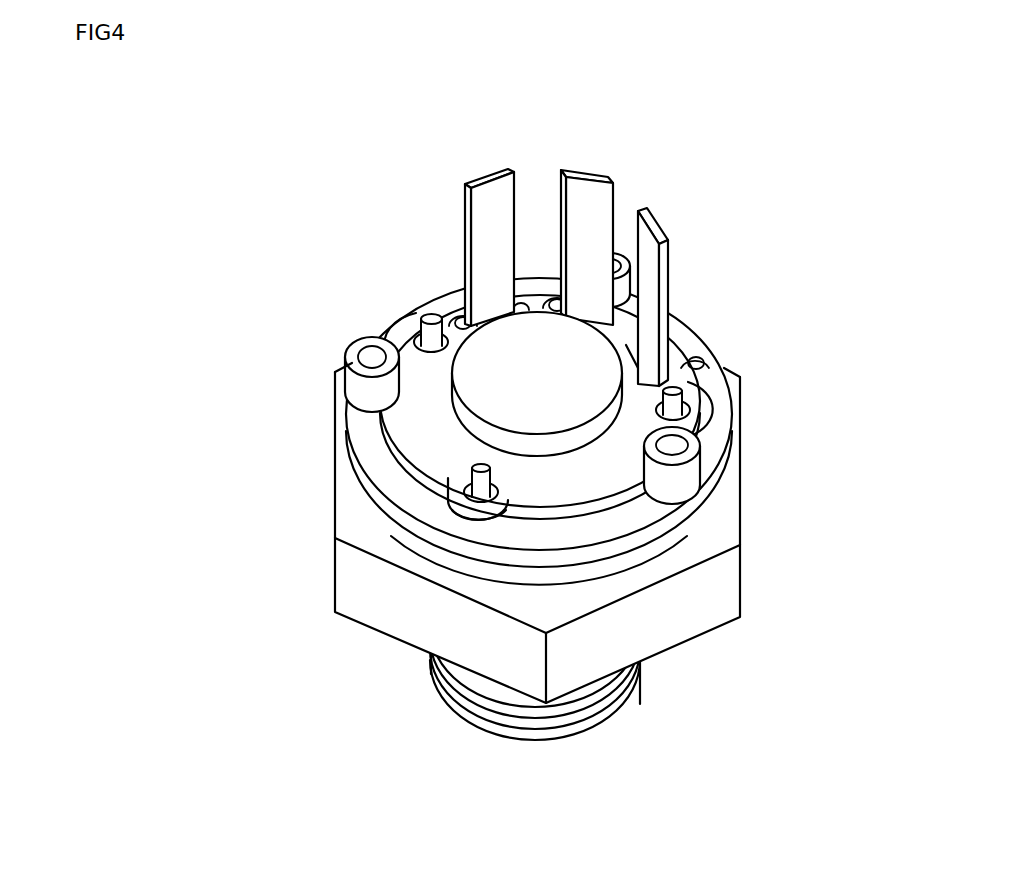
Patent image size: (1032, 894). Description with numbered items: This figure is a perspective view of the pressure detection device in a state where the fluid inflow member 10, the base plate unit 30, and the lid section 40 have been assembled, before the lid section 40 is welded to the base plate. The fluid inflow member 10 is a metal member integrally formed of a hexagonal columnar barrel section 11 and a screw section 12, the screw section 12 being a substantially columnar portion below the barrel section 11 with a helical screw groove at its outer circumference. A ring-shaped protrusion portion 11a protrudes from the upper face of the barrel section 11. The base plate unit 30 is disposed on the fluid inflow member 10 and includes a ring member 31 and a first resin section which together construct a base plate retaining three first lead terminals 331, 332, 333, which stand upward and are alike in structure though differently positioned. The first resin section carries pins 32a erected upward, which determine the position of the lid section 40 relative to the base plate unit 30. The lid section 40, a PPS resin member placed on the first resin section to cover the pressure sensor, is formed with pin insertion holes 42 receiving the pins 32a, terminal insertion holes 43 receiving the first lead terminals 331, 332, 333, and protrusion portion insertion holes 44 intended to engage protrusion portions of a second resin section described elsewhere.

The fluid inflow member 10 is at (333, 650).
The barrel section 11 is at (360, 600).
The protrusion portion 11a is at (572, 580).
The screw section 12 is at (455, 706).
The base plate unit 30 is at (607, 552).
The ring member 31 is at (370, 425).
The pin 32a is at (428, 308).
The lid section 40 is at (470, 423).
The pin insertion hole 42 is at (417, 313).
The terminal insertion hole 43 is at (463, 318).
The protrusion portion insertion hole 44 is at (613, 247).
The first lead terminal 331 is at (595, 216).
The first lead terminal 332 is at (672, 275).
The first lead terminal 333 is at (493, 202).